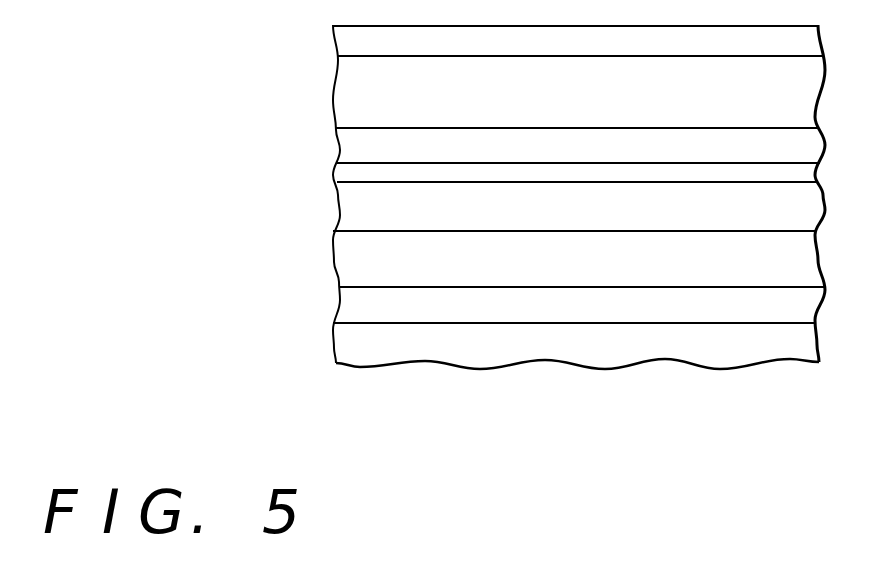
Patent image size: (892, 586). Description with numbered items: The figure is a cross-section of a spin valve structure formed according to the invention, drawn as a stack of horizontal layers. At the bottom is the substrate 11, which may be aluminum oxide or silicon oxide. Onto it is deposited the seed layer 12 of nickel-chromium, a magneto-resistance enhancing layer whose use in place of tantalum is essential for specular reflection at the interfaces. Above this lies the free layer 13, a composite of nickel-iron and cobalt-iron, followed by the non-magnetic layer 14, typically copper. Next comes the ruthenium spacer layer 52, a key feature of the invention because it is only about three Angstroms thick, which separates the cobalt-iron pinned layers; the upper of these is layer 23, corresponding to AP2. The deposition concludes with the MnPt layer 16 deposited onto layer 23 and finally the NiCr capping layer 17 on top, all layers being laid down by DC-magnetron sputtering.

The substrate 11 is at (345, 345).
The seed layer 12 is at (345, 303).
The free layer 13 is at (345, 260).
The non-magnetic layer 14 is at (345, 211).
The ruthenium spacer layer 52 is at (345, 177).
The AP2 layer 23 is at (345, 141).
The MnPt layer 16 is at (345, 87).
The NiCr capping layer 17 is at (345, 44).